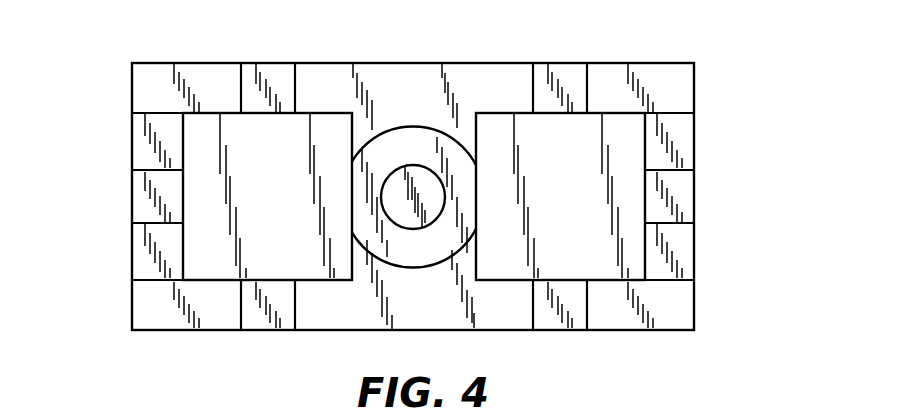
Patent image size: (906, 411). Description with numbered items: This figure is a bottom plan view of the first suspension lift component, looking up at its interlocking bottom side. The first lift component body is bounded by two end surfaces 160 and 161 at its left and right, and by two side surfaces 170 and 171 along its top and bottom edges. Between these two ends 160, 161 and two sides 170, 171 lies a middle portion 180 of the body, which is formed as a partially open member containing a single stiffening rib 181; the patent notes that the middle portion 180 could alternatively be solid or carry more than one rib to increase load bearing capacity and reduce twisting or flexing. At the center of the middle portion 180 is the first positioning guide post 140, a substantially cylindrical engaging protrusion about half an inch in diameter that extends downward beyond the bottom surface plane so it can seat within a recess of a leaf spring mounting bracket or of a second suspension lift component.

The first positioning guide post 140 is at (408, 228).
The end surface 160 is at (694, 210).
The end surface 161 is at (132, 218).
The side surface 170 is at (516, 63).
The side surface 171 is at (490, 330).
The middle portion 180 is at (383, 130).
The stiffening rib 181 is at (412, 150).